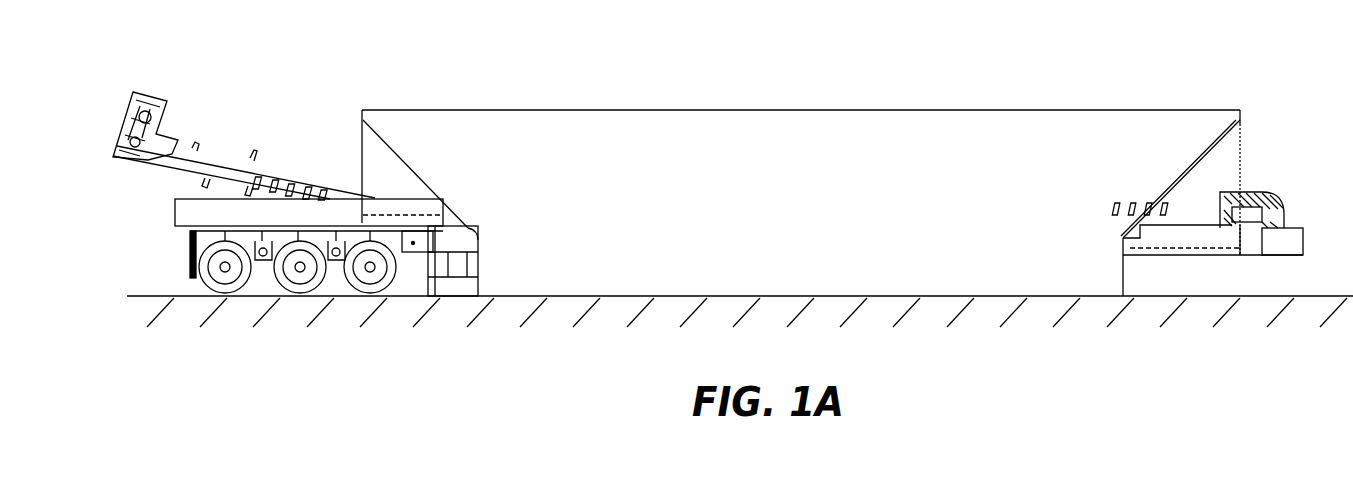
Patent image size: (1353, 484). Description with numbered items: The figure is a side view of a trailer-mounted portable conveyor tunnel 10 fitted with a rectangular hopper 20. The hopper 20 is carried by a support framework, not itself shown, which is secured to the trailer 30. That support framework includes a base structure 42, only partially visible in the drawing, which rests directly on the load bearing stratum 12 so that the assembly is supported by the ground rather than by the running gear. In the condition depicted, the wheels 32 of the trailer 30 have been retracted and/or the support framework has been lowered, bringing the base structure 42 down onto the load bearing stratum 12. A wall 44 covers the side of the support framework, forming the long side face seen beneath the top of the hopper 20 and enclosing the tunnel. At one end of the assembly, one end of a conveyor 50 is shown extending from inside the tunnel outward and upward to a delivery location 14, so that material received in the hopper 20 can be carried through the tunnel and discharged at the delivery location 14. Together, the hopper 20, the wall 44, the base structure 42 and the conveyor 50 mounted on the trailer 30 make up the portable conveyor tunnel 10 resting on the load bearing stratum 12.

The trailer-mounted portable conveyor tunnel 10 is at (360, 70).
The load bearing stratum 12 is at (407, 327).
The delivery location 14 is at (190, 148).
The rectangular hopper 20 is at (906, 108).
The trailer 30 is at (447, 240).
The wheels 32 is at (178, 262).
The base structure 42 is at (474, 232).
The wall 44 is at (800, 213).
The conveyor 50 is at (278, 172).